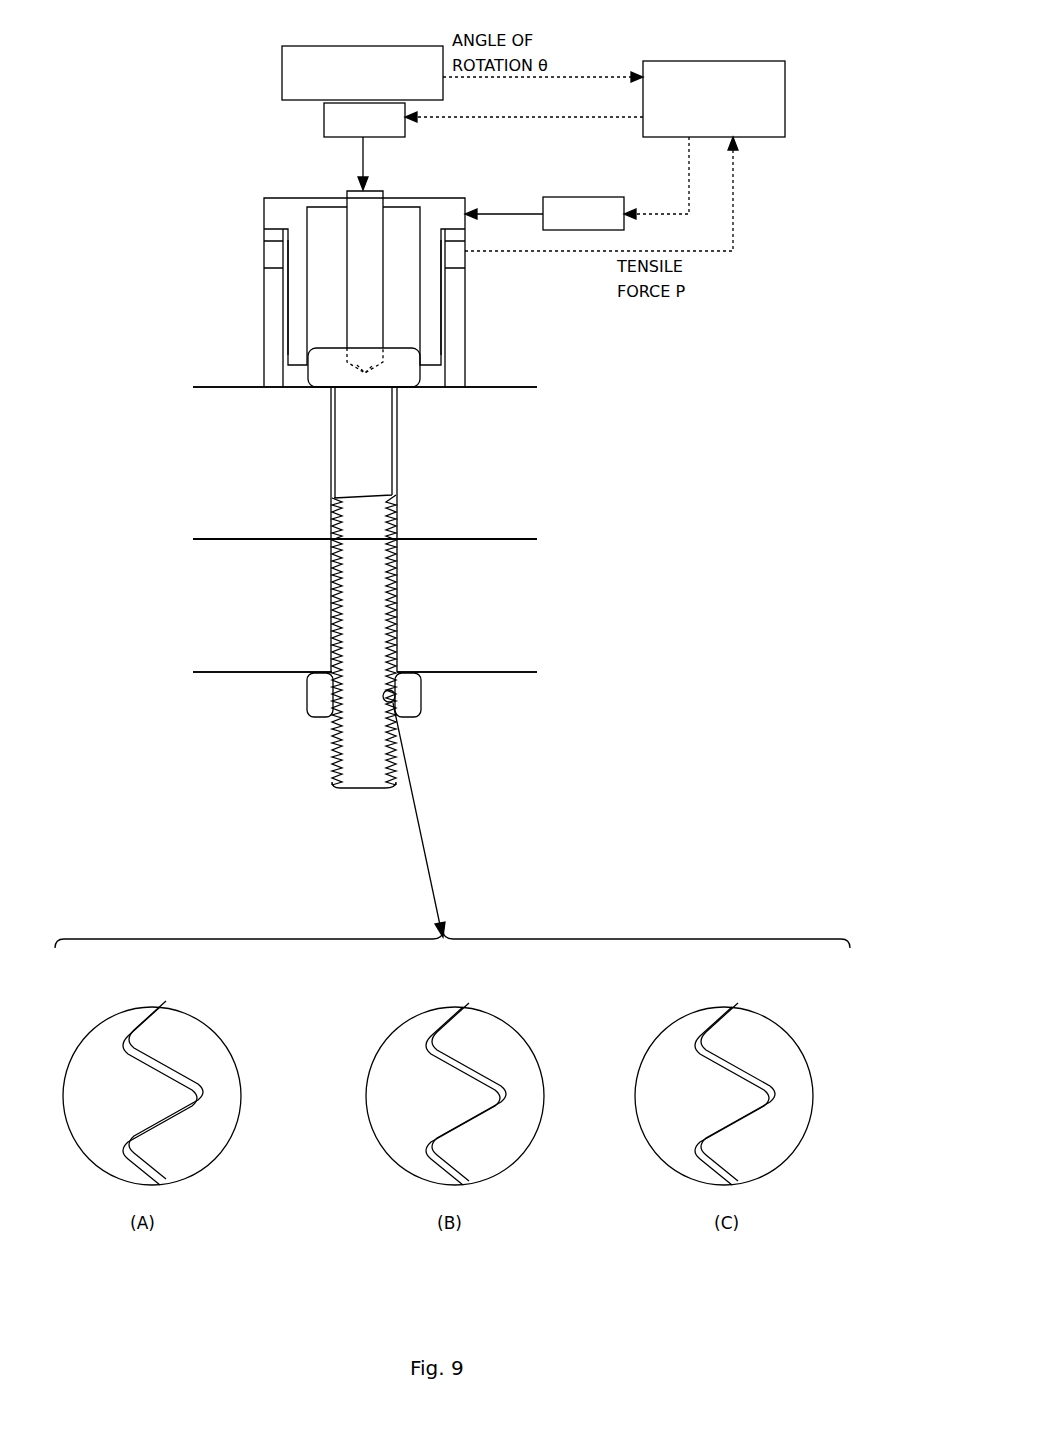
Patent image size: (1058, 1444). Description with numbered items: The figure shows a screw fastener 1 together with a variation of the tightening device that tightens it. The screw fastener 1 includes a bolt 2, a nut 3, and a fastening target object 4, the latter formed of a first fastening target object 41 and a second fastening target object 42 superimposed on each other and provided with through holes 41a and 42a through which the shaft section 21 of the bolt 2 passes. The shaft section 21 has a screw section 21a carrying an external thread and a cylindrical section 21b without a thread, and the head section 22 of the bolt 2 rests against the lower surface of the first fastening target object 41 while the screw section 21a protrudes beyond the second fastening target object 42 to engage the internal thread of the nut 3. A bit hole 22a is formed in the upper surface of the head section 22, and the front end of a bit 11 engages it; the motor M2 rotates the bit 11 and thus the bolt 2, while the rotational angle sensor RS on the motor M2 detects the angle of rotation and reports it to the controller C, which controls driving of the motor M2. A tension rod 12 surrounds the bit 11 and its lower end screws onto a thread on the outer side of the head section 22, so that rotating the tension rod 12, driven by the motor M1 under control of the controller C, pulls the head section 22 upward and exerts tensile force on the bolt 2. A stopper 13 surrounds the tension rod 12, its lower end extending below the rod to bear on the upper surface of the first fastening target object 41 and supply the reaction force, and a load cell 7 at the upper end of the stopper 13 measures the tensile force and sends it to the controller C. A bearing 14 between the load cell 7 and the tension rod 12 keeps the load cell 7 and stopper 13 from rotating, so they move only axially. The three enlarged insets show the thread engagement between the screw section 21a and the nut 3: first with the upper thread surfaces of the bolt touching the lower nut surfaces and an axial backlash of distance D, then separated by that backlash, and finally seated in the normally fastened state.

The screw fastener 1 is at (180, 716).
The bolt 2 is at (307, 631).
The nut 3 is at (322, 701).
The fastening target object 4 is at (193, 387).
The load cell 7 is at (273, 263).
The bit 11 is at (372, 200).
The tension rod 12 is at (297, 311).
The stopper 13 is at (273, 352).
The bearing 14 is at (273, 238).
The shaft section 21 is at (307, 587).
The screw section 21a is at (353, 523).
The cylindrical section 21b is at (348, 466).
The head section 22 is at (407, 373).
The bit hole 22a is at (347, 367).
The first fastening target object 41 is at (512, 419).
The through hole 41a is at (395, 497).
The second fastening target object 42 is at (513, 643).
The through hole 42a is at (395, 590).
The rotational angle sensor RS is at (282, 77).
The motor M1 is at (583, 197).
The motor M2 is at (324, 120).
The controller C is at (713, 61).
The distance D is at (163, 1122).